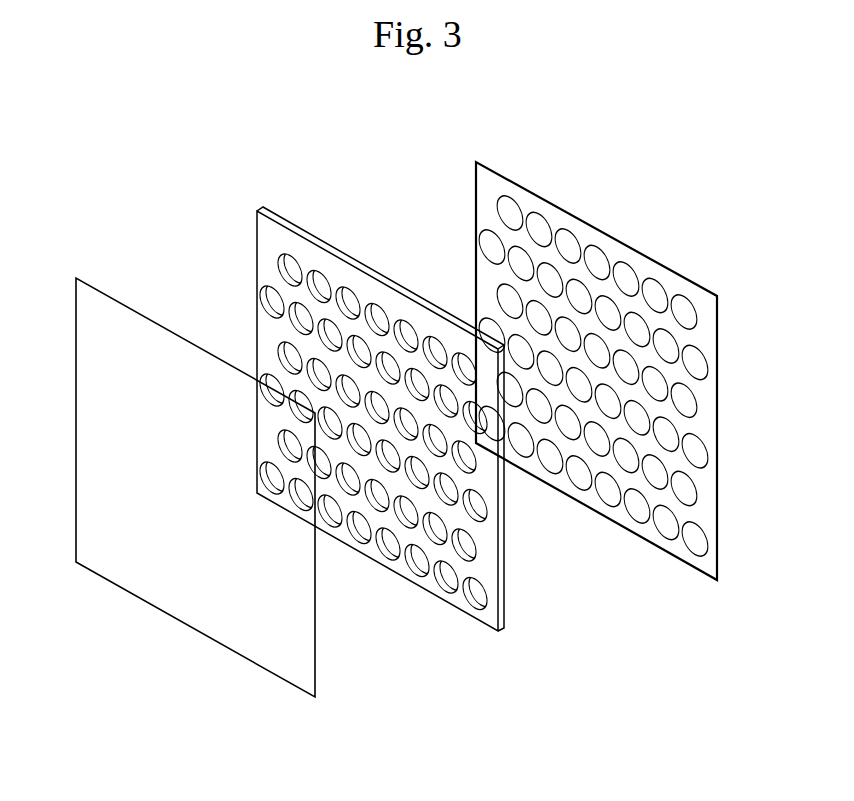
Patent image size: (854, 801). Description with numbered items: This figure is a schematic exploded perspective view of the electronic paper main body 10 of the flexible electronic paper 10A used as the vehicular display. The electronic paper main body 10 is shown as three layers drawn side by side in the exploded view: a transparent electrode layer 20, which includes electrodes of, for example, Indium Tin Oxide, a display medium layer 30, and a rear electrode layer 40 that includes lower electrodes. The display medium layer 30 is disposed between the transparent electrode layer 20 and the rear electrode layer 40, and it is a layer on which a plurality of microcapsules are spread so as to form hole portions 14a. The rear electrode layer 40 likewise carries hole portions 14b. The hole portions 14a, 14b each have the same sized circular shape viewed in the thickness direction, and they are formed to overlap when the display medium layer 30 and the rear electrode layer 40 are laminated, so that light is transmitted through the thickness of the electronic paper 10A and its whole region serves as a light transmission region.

The electronic paper 10A is at (156, 179).
The electronic paper main body 10 is at (60, 283).
The hole portions 14a is at (322, 277).
The hole portions 14b is at (567, 237).
The transparent electrode layer 20 is at (288, 672).
The display medium layer 30 is at (485, 628).
The rear electrode layer 40 is at (697, 568).